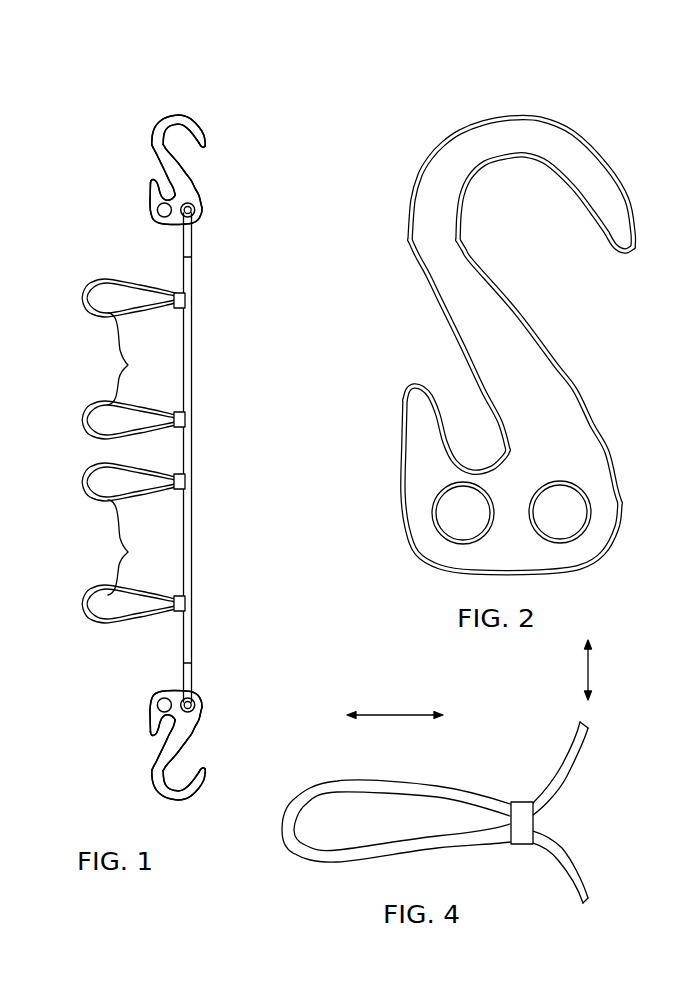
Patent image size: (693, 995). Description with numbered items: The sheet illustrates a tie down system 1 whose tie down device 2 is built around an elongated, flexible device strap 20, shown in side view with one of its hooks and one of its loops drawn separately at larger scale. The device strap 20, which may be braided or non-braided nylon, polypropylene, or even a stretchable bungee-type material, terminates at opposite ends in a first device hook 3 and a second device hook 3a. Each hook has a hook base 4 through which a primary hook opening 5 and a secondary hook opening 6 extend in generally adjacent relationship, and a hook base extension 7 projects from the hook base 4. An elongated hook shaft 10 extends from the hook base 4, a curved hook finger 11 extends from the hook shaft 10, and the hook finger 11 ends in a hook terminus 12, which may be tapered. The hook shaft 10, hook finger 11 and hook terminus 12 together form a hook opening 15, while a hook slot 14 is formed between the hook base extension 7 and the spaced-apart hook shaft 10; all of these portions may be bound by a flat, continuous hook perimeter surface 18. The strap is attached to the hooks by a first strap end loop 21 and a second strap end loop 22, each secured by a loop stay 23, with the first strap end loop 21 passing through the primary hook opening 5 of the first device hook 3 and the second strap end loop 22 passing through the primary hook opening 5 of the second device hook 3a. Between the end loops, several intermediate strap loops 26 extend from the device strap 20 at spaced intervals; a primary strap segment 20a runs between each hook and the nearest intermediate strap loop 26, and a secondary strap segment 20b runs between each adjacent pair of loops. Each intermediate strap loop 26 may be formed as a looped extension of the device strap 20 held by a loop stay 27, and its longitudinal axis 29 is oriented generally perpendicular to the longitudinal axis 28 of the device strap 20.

In FIG. 1, the tie down system 1 is at (115, 104).
In FIG. 1, the tie down device 2 is at (244, 188).
In FIG. 1, the first device hook 3 is at (202, 187).
In FIG. 2, the first device hook 3 is at (583, 379).
In FIG. 1, the second device hook 3a is at (208, 703).
In FIG. 1, the hook base 4 is at (172, 230).
In FIG. 2, the hook base 4 is at (530, 548).
In FIG. 1, the primary hook opening 5 is at (197, 200).
In FIG. 2, the primary hook opening 5 is at (585, 530).
In FIG. 1, the secondary hook opening 6 is at (160, 214).
In FIG. 2, the secondary hook opening 6 is at (455, 532).
In FIG. 1, the hook base extension 7 is at (150, 193).
In FIG. 2, the hook base extension 7 is at (416, 425).
In FIG. 1, the hook shaft 10 is at (166, 170).
In FIG. 2, the hook shaft 10 is at (495, 325).
In FIG. 1, the hook finger 11 is at (173, 114).
In FIG. 2, the hook finger 11 is at (537, 143).
In FIG. 1, the hook terminus 12 is at (207, 137).
In FIG. 2, the hook terminus 12 is at (618, 238).
In FIG. 1, the hook slot 14 is at (143, 176).
In FIG. 2, the hook slot 14 is at (450, 388).
In FIG. 1, the hook opening 15 is at (185, 147).
In FIG. 2, the hook opening 15 is at (560, 262).
In FIG. 2, the hook perimeter surface 18 is at (412, 262).
In FIG. 1, the device strap 20 is at (191, 349).
In FIG. 4, the device strap 20 is at (566, 743).
In FIG. 1, the primary strap segment 20a is at (192, 280).
In FIG. 1, the secondary strap segment 20b is at (192, 380).
In FIG. 1, the first strap end loop 21 is at (197, 223).
In FIG. 1, the second strap end loop 22 is at (193, 692).
In FIG. 1, the loop stay 23 is at (192, 253).
In FIG. 1, the intermediate strap loop 26 is at (119, 451).
In FIG. 4, the intermediate strap loop 26 is at (405, 790).
In FIG. 1, the loop stay 27 is at (186, 298).
In FIG. 4, the loop stay 27 is at (522, 805).
In FIG. 4, the longitudinal axis of the device strap 28 is at (590, 667).
In FIG. 4, the longitudinal axis of the intermediate strap loop 29 is at (380, 715).